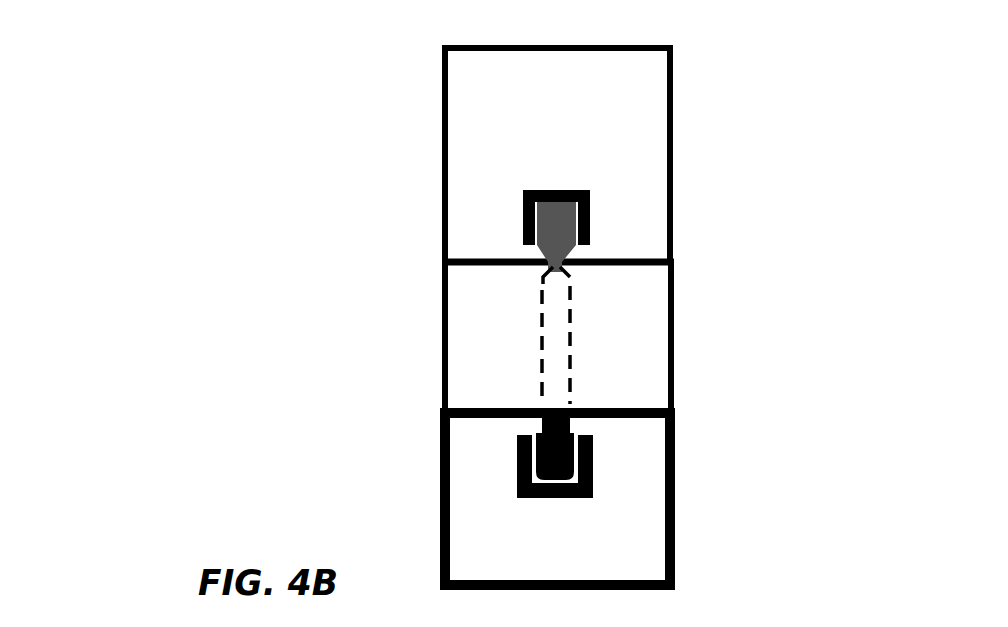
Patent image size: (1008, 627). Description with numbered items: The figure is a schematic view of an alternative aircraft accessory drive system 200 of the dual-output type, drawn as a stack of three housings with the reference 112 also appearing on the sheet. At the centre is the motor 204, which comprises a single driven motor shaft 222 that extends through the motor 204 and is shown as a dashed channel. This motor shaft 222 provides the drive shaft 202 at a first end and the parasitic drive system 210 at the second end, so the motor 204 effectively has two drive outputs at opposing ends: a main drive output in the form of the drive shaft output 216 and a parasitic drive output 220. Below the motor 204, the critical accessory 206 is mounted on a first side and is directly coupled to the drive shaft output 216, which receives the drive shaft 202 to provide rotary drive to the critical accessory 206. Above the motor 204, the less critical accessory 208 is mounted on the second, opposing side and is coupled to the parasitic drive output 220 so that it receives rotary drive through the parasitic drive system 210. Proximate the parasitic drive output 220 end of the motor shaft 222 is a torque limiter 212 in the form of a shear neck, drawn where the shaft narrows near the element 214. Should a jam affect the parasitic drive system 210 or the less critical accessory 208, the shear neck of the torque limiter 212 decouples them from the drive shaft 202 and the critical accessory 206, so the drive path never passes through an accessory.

The sheet reference 112 is at (52, 124).
The aircraft accessory drive system 200 is at (338, 116).
The drive shaft 202 is at (540, 427).
The motor 204 is at (643, 390).
The critical accessory 206 is at (635, 552).
The less critical accessory 208 is at (620, 127).
The parasitic drive system 210 is at (587, 243).
The torque limiter 212 is at (562, 257).
The chevron guide 214 is at (538, 275).
The drive shaft output 216 is at (518, 459).
The parasitic drive output 220 is at (587, 203).
The motor shaft 222 is at (540, 339).